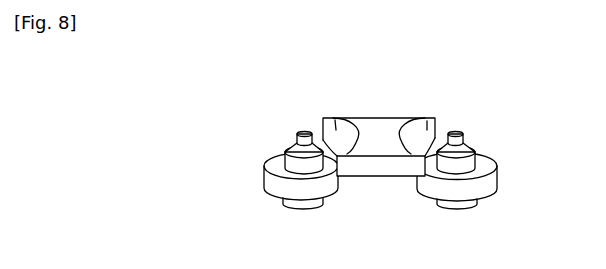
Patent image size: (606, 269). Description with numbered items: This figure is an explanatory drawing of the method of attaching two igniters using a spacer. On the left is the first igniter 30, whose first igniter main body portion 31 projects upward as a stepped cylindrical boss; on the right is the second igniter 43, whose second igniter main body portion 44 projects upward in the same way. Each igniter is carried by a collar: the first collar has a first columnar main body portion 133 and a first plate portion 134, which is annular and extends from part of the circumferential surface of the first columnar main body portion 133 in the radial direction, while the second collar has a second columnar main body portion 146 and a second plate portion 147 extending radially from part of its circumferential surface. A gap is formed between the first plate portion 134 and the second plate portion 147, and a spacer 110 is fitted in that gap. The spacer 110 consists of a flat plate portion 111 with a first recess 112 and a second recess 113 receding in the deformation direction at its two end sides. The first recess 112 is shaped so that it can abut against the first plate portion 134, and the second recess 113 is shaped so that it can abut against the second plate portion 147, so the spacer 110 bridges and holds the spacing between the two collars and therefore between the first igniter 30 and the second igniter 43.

The first igniter 30 is at (269, 176).
The first igniter main body portion 31 is at (299, 132).
The second igniter 43 is at (491, 165).
The second igniter main body portion 44 is at (459, 132).
The spacer 110 is at (399, 149).
The flat plate portion 111 is at (383, 166).
The first recess 112 is at (331, 117).
The second recess 113 is at (437, 129).
The first columnar main body portion 133 is at (308, 209).
The first plate portion 134 is at (275, 188).
The second columnar main body portion 146 is at (459, 205).
The second plate portion 147 is at (479, 183).